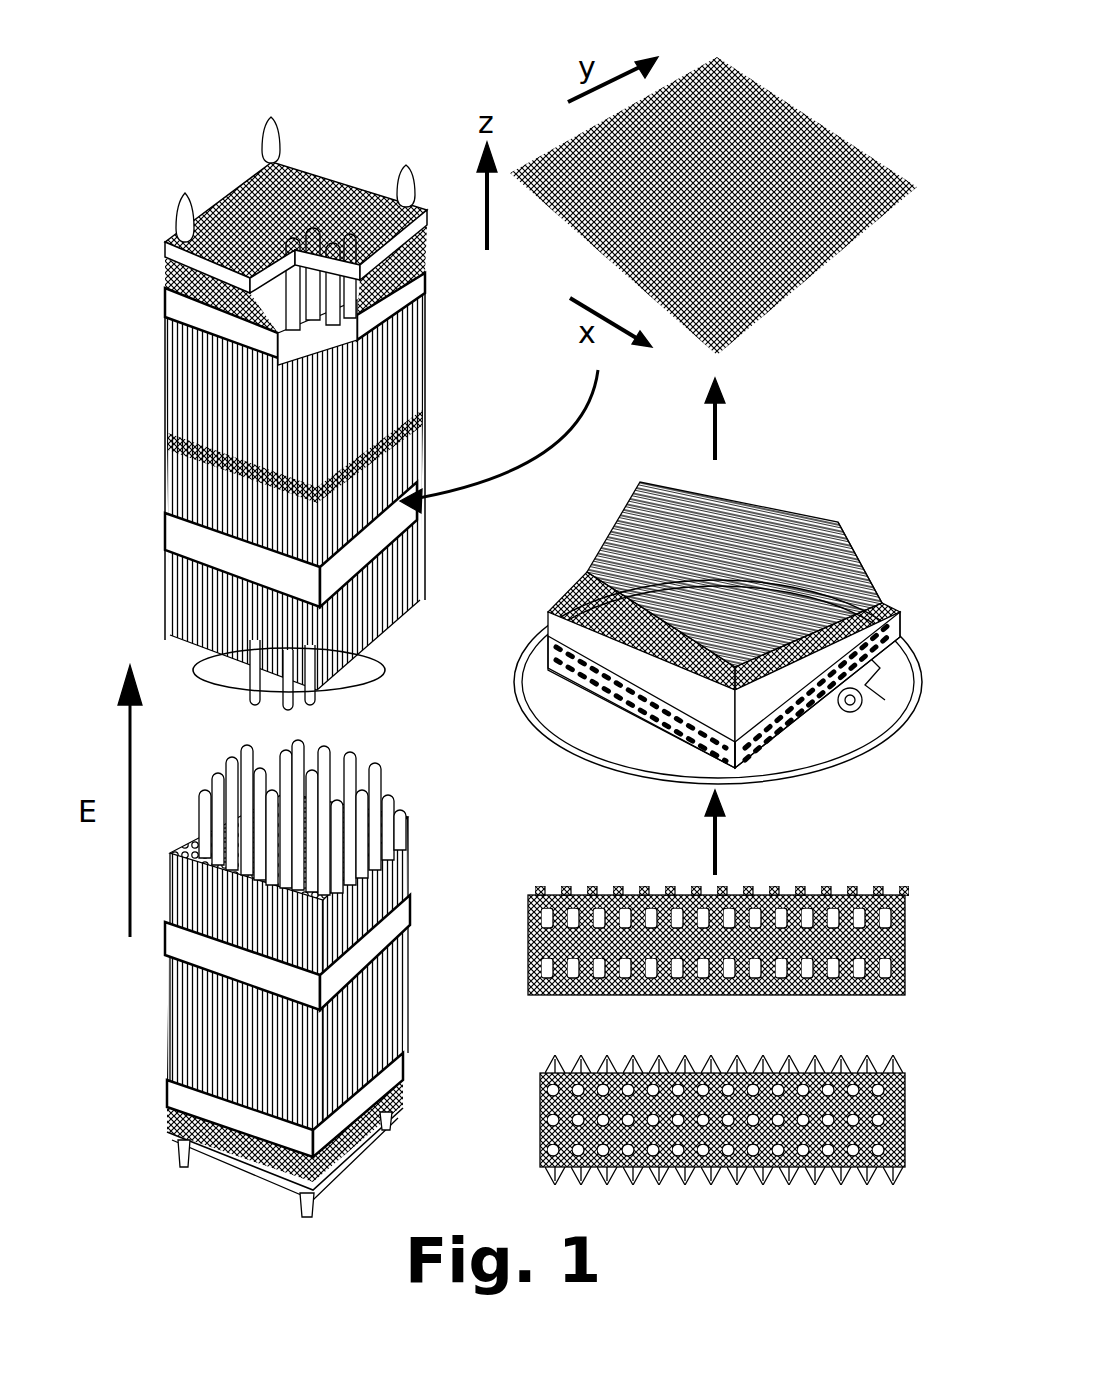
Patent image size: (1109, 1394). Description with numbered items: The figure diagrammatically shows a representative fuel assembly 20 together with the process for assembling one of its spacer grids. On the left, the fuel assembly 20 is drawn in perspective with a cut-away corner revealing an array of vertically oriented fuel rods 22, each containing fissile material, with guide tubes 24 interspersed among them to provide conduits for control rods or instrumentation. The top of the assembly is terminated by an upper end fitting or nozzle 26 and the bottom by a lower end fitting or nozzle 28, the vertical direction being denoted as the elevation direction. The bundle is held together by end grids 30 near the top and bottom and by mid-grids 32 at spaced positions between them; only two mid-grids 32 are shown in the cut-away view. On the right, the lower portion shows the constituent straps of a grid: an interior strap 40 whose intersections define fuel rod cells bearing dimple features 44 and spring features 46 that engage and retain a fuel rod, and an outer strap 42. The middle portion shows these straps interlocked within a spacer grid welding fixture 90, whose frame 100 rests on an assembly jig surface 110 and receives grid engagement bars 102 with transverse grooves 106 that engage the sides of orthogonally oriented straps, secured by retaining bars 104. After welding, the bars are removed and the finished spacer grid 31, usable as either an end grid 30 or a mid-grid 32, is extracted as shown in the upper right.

The fuel assembly 20 is at (82, 238).
The fuel rods 22 is at (187, 625).
The guide tubes 24 is at (380, 678).
The upper end fitting or nozzle 26 is at (317, 190).
The lower end fitting or nozzle 28 is at (352, 1147).
The end grids 30 is at (178, 303).
The spacer grid 31 is at (893, 120).
The mid-grids 32 is at (185, 538).
The interior strap 40 is at (787, 95).
The outer strap 42 is at (588, 258).
The dimple features 44 is at (710, 930).
The spring features 46 is at (820, 950).
The spacer grid welding fixture 90 is at (893, 490).
The frame 100 is at (620, 688).
The grid engagement bars 102 is at (795, 527).
The retaining bars 104 is at (823, 613).
The grooves 106 is at (691, 658).
The assembly jig surface 110 is at (607, 730).